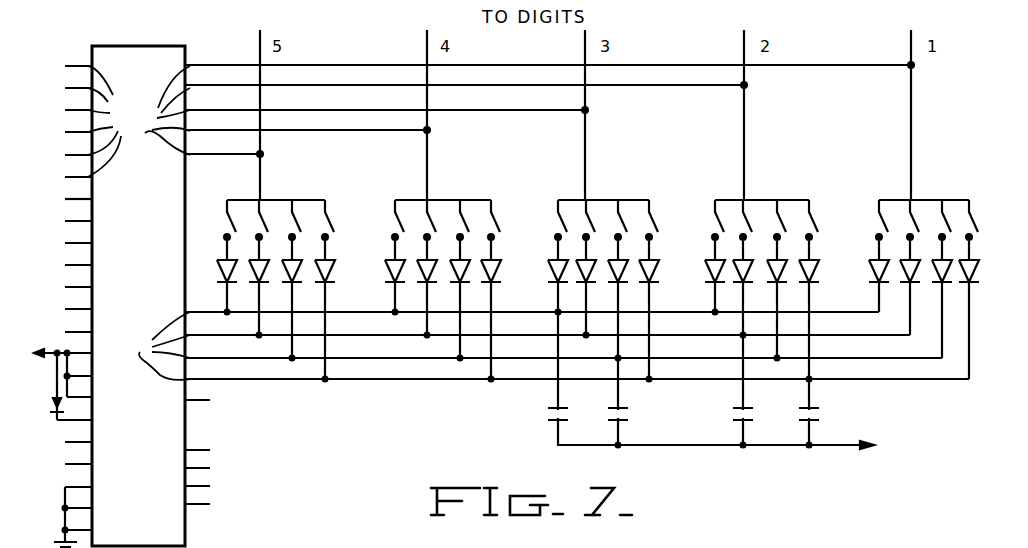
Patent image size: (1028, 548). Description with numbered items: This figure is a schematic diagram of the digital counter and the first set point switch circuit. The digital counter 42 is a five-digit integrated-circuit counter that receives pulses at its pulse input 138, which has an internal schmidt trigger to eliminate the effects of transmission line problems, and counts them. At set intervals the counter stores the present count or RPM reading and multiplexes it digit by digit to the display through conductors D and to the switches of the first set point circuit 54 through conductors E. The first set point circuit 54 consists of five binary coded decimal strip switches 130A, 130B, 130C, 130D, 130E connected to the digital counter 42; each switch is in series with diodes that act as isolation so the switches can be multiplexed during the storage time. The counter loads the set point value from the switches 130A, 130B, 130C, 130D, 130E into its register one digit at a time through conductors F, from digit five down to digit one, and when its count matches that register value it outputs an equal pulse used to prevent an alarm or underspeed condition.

The digital counter 42 is at (145, 280).
The pulse input 138 is at (80, 200).
The binary coded decimal strip switch 130A is at (278, 200).
The binary coded decimal strip switch 130B is at (440, 200).
The binary coded decimal strip switch 130C is at (603, 200).
The binary coded decimal strip switch 130D is at (755, 200).
The binary coded decimal strip switch 130E is at (919, 200).
The first set point circuit 54 is at (484, 398).